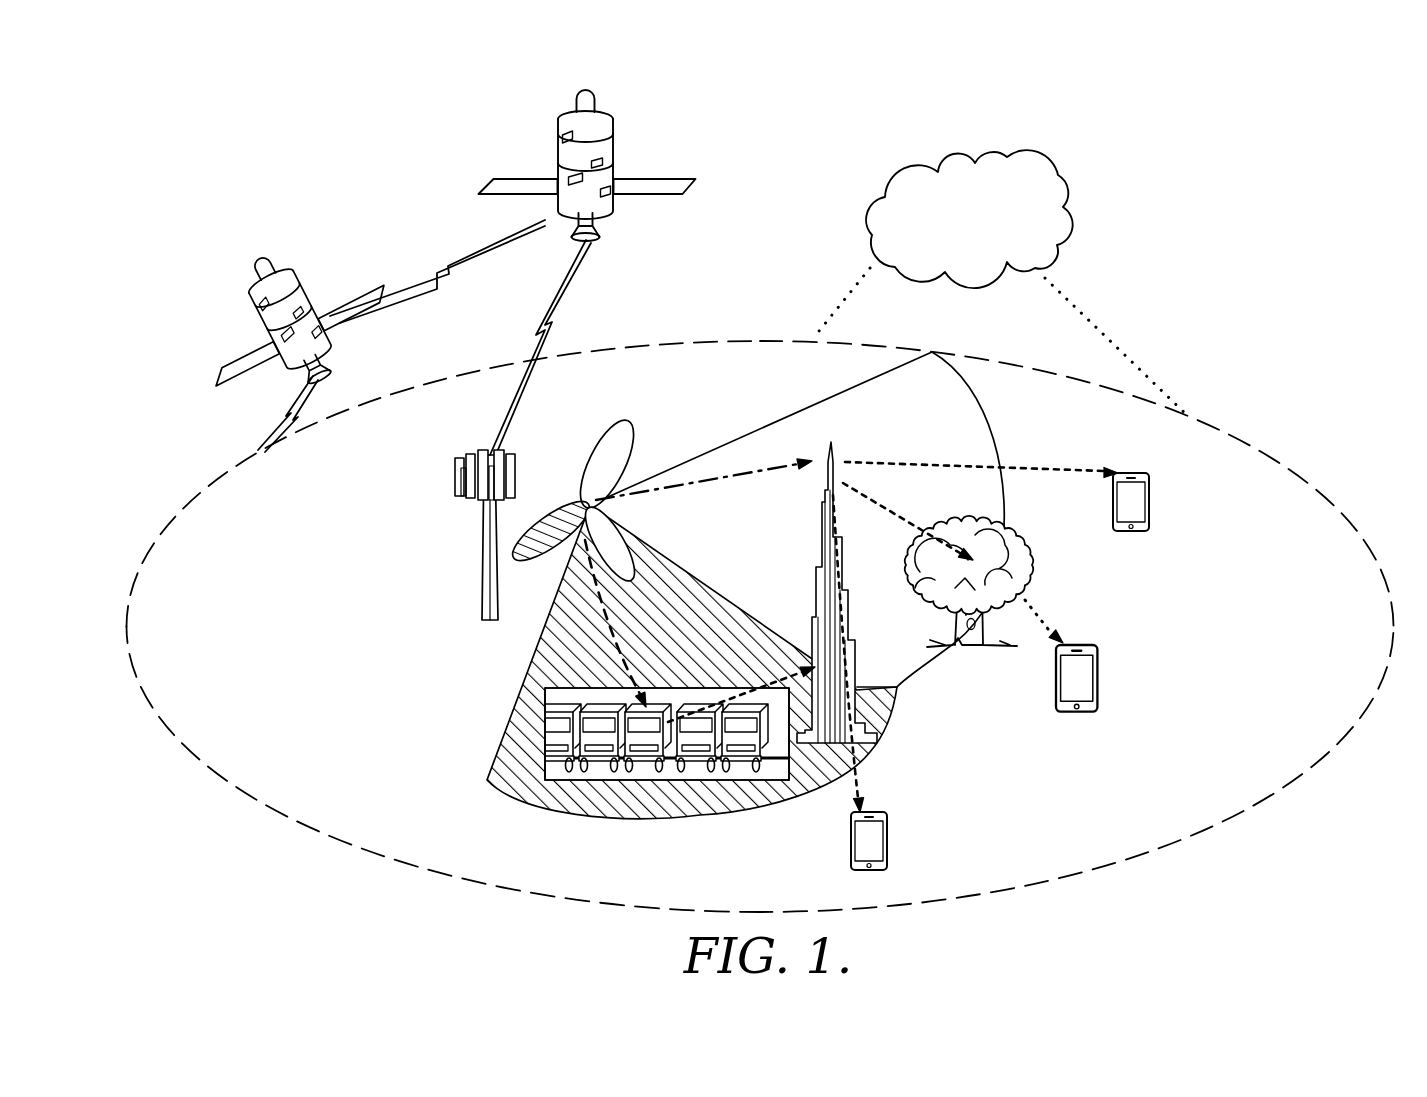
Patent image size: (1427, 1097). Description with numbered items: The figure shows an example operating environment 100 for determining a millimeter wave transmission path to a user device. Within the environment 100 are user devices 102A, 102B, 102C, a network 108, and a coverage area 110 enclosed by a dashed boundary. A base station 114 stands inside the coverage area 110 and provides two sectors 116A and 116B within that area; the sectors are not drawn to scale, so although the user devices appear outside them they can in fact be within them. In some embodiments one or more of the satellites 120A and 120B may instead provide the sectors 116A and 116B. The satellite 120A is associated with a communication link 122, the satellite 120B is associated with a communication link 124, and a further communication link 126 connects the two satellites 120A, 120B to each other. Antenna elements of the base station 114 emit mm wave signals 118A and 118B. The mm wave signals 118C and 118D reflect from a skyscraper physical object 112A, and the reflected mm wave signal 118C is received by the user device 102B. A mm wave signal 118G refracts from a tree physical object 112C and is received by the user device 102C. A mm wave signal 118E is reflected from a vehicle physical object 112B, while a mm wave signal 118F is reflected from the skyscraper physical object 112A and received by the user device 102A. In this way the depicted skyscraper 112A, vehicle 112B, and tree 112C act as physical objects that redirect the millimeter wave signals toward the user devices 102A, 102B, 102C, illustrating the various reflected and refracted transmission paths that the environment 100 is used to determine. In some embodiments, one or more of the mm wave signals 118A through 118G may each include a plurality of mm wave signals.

The example environment 100 is at (1330, 90).
The user device 102A is at (851, 845).
The user device 102B is at (1148, 500).
The user device 102C is at (1101, 672).
The network 108 is at (989, 232).
The coverage area 110 is at (201, 641).
The skyscraper physical object 112A is at (815, 558).
The vehicle physical object 112B is at (674, 782).
The tree physical object 112C is at (1017, 550).
The base station 114 is at (514, 455).
The sector 116A is at (517, 686).
The sector 116B is at (729, 442).
The mm wave signal 118A is at (704, 485).
The mm wave signal 118B is at (616, 623).
The reflected mm wave signal 118C is at (981, 462).
The reflected mm wave signal 118D is at (908, 521).
The reflected mm wave signal 118E is at (741, 694).
The reflected mm wave signal 118F is at (875, 653).
The refracted mm wave signal 118G is at (1059, 614).
The satellite 120A is at (647, 177).
The satellite 120B is at (256, 310).
The communication link 122 is at (562, 336).
The communication link 124 is at (274, 420).
The communication link 126 is at (446, 257).